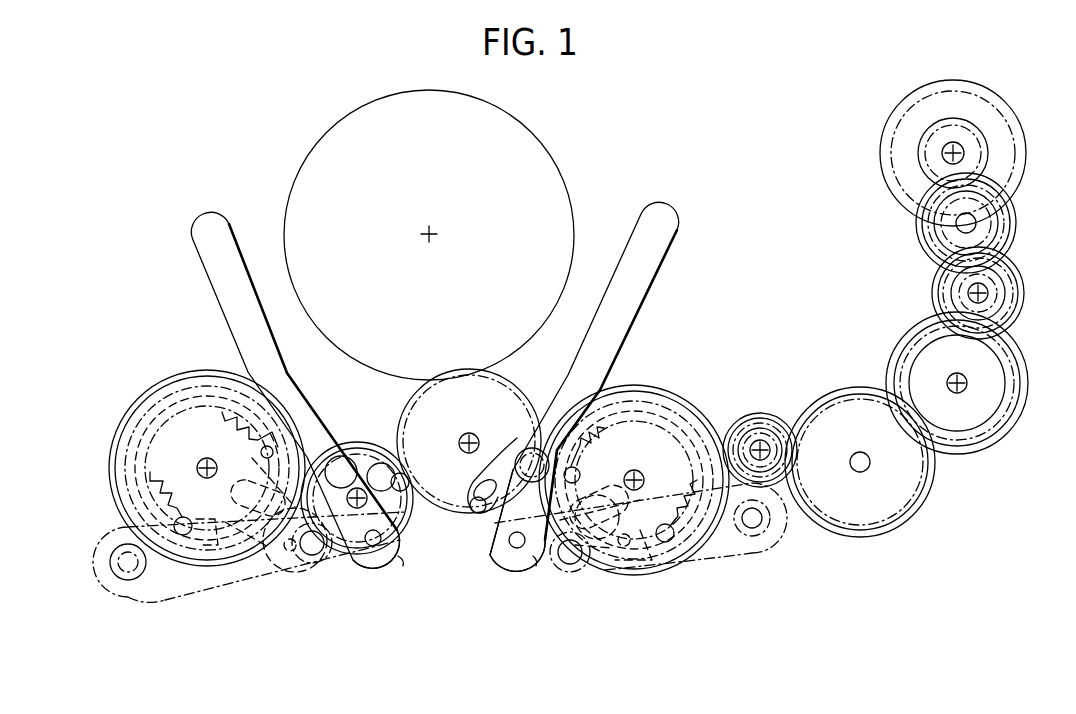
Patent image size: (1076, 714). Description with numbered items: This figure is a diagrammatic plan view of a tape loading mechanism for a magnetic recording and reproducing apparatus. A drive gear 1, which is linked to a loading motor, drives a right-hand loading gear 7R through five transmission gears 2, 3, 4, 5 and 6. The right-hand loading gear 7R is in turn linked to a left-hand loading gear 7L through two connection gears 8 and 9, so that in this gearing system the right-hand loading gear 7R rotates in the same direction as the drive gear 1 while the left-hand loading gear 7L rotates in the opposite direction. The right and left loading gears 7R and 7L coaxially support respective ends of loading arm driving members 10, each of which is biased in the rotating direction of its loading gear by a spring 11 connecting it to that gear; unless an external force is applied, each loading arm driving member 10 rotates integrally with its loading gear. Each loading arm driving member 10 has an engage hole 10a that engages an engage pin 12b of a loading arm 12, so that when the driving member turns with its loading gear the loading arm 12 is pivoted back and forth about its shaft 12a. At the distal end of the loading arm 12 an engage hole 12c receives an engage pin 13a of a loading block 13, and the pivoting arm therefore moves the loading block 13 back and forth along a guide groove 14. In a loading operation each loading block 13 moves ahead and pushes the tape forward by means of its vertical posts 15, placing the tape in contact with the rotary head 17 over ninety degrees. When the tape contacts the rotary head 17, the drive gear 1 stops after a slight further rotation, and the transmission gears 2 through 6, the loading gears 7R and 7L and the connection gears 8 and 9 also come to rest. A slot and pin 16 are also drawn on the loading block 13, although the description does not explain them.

The drive gear 1 is at (986, 90).
The transmission gear 2 is at (1010, 231).
The transmission gear 3 is at (1023, 312).
The transmission gear 4 is at (995, 437).
The transmission gear 5 is at (913, 512).
The transmission gear 6 is at (762, 417).
The left-hand loading gear 7L is at (152, 393).
The right-hand loading gear 7R is at (682, 395).
The connection gear 8 is at (438, 508).
The connection gear 9 is at (357, 440).
The loading arm driving member 10 is at (133, 450).
The engage hole 10a is at (290, 545).
The spring 11 is at (222, 412).
The loading arm 12 is at (218, 593).
The shaft 12a is at (122, 582).
The engage pin 12b is at (318, 560).
The engage hole 12c is at (400, 560).
The loading block 13 is at (306, 452).
The engage pin 13a is at (374, 548).
The guide groove 14 is at (200, 247).
The vertical post 15 is at (342, 462).
The slot pin 16 is at (390, 473).
The rotary head 17 is at (550, 158).